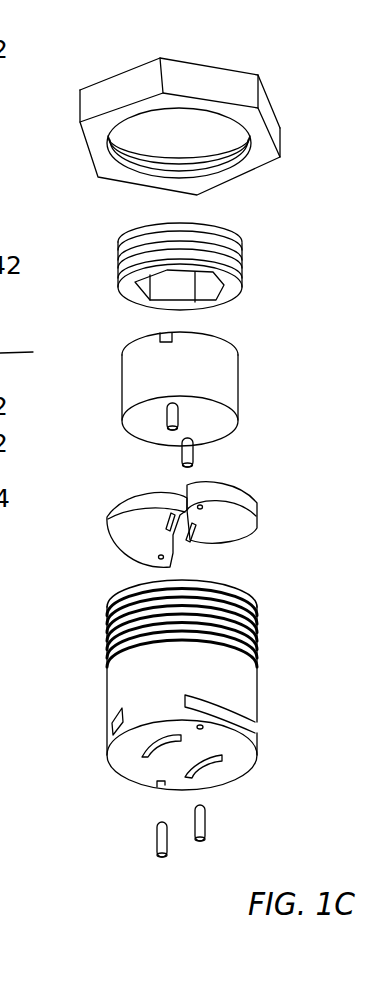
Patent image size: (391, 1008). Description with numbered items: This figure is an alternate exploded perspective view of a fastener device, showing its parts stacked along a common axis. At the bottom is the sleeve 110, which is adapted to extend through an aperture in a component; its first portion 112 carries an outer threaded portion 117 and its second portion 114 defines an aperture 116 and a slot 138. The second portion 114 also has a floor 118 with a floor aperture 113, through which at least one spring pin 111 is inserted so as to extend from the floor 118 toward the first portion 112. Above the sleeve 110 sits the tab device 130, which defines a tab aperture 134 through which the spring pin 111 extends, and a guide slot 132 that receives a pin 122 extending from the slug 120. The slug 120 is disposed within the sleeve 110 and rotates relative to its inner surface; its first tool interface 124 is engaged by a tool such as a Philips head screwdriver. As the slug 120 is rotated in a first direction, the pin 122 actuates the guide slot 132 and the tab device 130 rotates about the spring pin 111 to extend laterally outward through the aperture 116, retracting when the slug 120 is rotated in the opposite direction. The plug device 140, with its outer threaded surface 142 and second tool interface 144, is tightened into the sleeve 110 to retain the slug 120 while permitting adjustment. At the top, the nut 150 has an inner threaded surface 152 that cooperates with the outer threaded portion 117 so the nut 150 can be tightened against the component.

The nut 150 is at (225, 90).
The inner threaded surface 152 is at (215, 163).
The plug device 140 is at (228, 283).
The outer threaded surface 142 is at (222, 232).
The second tool interface 144 is at (205, 288).
The slug 120 is at (218, 380).
The first tool interface 124 is at (166, 332).
The pin 122 is at (178, 417).
The tab device 130 is at (237, 530).
The guide slot 132 is at (163, 520).
The tab aperture 134 is at (203, 507).
The sleeve 110 is at (140, 697).
The first portion 112 is at (258, 607).
The outer threaded portion 117 is at (110, 605).
The second portion 114 is at (258, 722).
The aperture 116 is at (113, 722).
The slot 138 is at (143, 752).
The floor 118 is at (233, 752).
The floor aperture 113 is at (160, 785).
The spring pin 111 is at (198, 842).